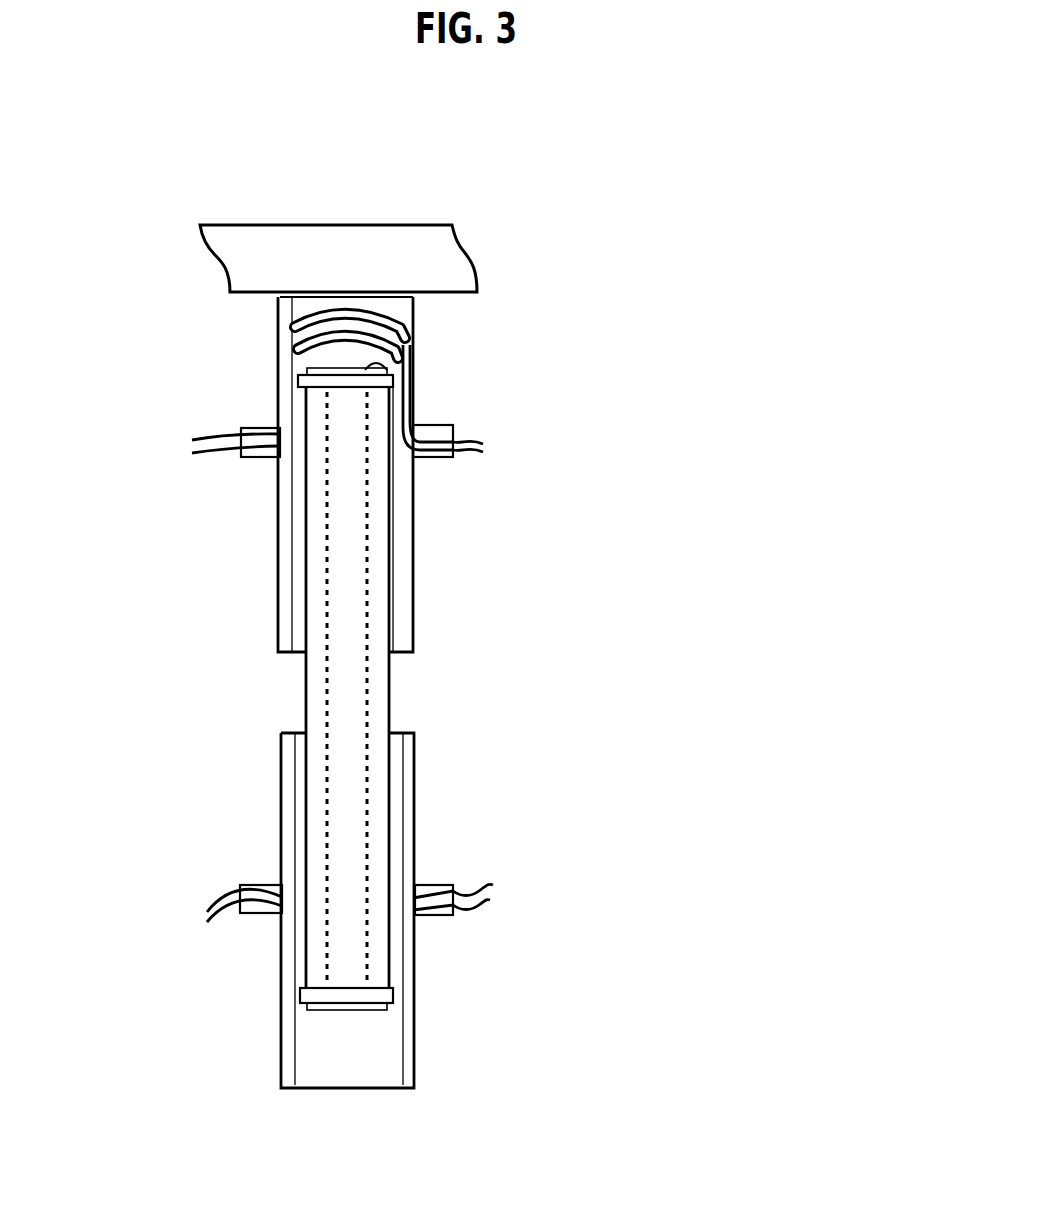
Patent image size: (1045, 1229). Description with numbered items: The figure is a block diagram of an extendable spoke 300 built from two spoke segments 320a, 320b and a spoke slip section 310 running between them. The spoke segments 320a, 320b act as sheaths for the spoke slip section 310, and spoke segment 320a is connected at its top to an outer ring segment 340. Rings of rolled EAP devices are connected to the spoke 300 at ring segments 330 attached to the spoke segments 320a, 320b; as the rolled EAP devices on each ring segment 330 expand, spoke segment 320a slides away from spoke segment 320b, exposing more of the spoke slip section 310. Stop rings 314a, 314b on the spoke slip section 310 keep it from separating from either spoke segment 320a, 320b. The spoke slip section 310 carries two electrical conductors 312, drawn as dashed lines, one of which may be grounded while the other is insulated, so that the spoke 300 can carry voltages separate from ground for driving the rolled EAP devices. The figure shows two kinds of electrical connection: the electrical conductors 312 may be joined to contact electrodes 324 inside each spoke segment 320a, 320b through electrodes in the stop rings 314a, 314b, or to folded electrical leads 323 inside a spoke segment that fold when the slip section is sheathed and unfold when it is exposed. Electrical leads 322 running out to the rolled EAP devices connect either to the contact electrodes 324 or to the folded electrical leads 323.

The extendable spoke 300 is at (507, 184).
The outer ring segment 340 is at (423, 262).
The folded electrical leads 323 is at (410, 318).
The electrical leads 322 is at (483, 963).
The stop ring 314b is at (305, 383).
The ring segment 330 is at (445, 463).
The spoke segment 320a is at (407, 527).
The electrical conductors 312 is at (328, 683).
The spoke slip section 310 is at (395, 707).
The spoke segment 320b is at (403, 790).
The stop ring 314a is at (393, 995).
The contact electrodes 324 is at (280, 628).